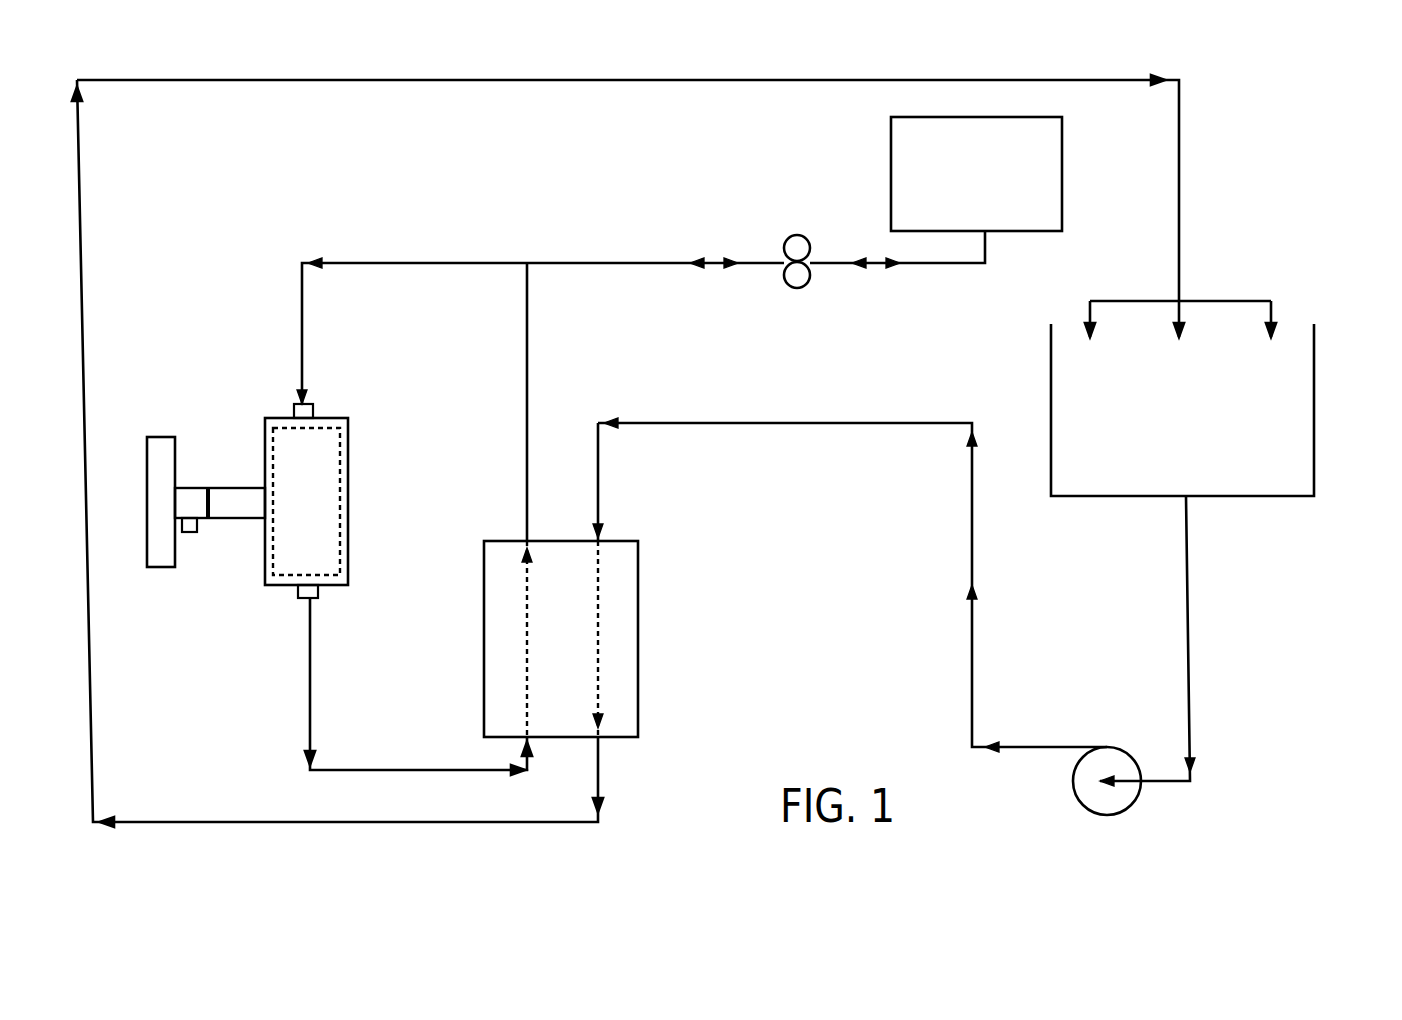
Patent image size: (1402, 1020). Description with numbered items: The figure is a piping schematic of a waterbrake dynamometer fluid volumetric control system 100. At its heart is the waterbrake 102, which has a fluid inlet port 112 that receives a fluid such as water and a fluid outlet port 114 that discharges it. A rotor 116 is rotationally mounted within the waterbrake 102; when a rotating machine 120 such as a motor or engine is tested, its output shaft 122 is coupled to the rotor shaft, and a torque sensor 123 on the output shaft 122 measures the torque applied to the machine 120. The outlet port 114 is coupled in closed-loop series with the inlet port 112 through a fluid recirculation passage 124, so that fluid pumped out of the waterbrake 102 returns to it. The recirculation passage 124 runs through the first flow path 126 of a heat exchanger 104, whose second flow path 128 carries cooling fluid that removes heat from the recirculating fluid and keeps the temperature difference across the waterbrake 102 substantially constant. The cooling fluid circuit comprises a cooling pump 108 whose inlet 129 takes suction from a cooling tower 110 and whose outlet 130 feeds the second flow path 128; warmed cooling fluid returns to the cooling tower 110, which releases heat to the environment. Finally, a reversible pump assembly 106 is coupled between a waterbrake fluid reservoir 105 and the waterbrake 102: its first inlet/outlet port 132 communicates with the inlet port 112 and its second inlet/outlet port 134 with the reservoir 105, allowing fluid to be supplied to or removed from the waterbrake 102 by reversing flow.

The waterbrake dynamometer fluid volumetric control system 100 is at (1266, 141).
The waterbrake 102 is at (348, 452).
The heat exchanger 104 is at (638, 585).
The waterbrake fluid reservoir 105 is at (891, 127).
The reversible pump assembly 106 is at (797, 235).
The cooling pump 108 is at (1114, 749).
The cooling tower 110 is at (1314, 390).
The fluid inlet port 112 is at (313, 411).
The fluid outlet port 114 is at (318, 592).
The rotor 116 is at (340, 520).
The rotating machine 120 is at (148, 449).
The output shaft 122 is at (196, 488).
The torque sensor 123 is at (195, 534).
The fluid recirculation passage 124 is at (372, 302).
The first flow path 126 is at (527, 684).
The second flow path 128 is at (598, 683).
The cooling pump inlet 129 is at (1160, 783).
The cooling pump outlet 130 is at (1040, 747).
The first inlet/outlet port 132 is at (772, 265).
The second inlet/outlet port 134 is at (815, 265).